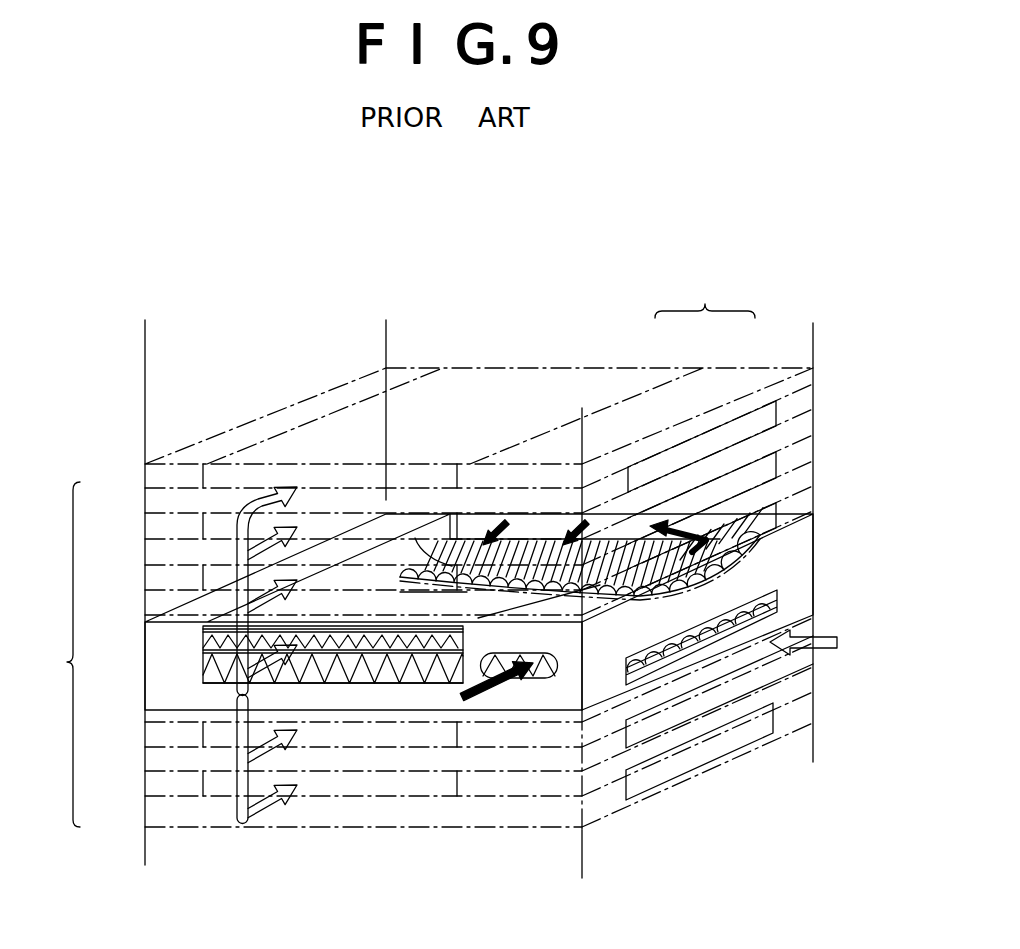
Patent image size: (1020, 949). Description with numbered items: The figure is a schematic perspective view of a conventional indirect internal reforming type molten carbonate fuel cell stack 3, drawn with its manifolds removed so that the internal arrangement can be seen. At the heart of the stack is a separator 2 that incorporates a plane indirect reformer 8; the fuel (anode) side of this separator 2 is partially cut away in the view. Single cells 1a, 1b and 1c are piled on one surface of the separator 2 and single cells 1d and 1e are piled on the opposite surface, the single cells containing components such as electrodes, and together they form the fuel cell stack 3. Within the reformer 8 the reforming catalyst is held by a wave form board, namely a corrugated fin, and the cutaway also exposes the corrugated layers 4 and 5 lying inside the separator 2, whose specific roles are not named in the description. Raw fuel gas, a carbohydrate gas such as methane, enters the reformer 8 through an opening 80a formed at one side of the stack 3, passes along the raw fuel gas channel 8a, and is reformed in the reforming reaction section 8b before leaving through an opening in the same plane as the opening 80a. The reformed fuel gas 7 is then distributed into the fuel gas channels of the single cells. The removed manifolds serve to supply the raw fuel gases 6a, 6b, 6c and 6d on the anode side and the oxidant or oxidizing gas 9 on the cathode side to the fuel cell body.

The single cell 1a is at (145, 500).
The single cell 1b is at (145, 545).
The single cell 1c is at (145, 597).
The single cell 1d is at (145, 753).
The single cell 1e is at (145, 798).
The separator 2 is at (145, 672).
The fuel cell stack 3 is at (426, 599).
The corrugated fin 4 is at (417, 683).
The corrugated sheet 5 is at (408, 683).
The raw fuel gas 6a is at (487, 693).
The raw fuel gas 6b is at (506, 522).
The raw fuel gas 6c is at (585, 522).
The raw fuel gas 6d is at (775, 500).
The fuel gas 7 is at (297, 703).
The indirect reformer 8 is at (705, 287).
The raw fuel gas channel 8a is at (645, 545).
The reforming reaction section 8b is at (605, 530).
The oxidant gas 9 is at (822, 637).
The opening 80a is at (551, 680).